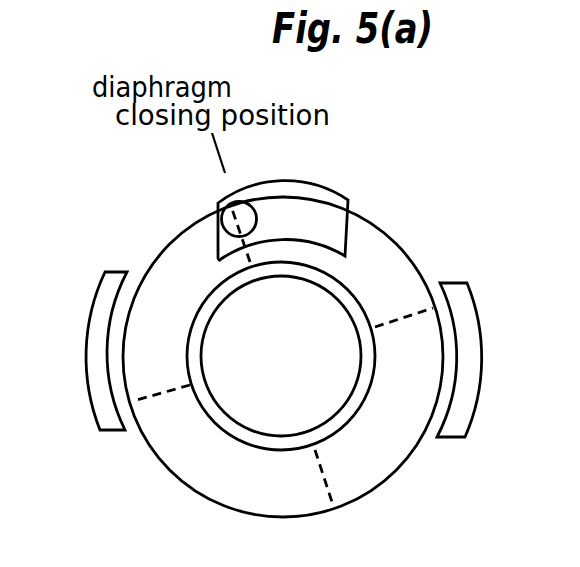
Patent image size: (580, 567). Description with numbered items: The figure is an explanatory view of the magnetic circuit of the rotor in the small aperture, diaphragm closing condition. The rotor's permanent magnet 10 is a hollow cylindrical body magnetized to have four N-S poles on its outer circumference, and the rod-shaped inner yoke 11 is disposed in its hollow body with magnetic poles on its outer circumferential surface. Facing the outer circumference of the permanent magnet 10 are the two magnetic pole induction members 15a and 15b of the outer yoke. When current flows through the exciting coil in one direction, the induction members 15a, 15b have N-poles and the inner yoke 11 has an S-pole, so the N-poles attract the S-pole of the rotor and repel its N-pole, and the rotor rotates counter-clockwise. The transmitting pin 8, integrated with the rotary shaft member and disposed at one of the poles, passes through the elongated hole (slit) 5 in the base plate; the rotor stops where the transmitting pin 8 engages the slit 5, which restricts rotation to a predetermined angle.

The elongated hole (slit) 5 is at (316, 185).
The transmitting pin 8 is at (224, 211).
The permanent magnet 10 is at (366, 464).
The inner yoke 11 is at (279, 418).
The magnetic pole induction member 15a is at (469, 384).
The magnetic pole induction member 15b is at (103, 401).